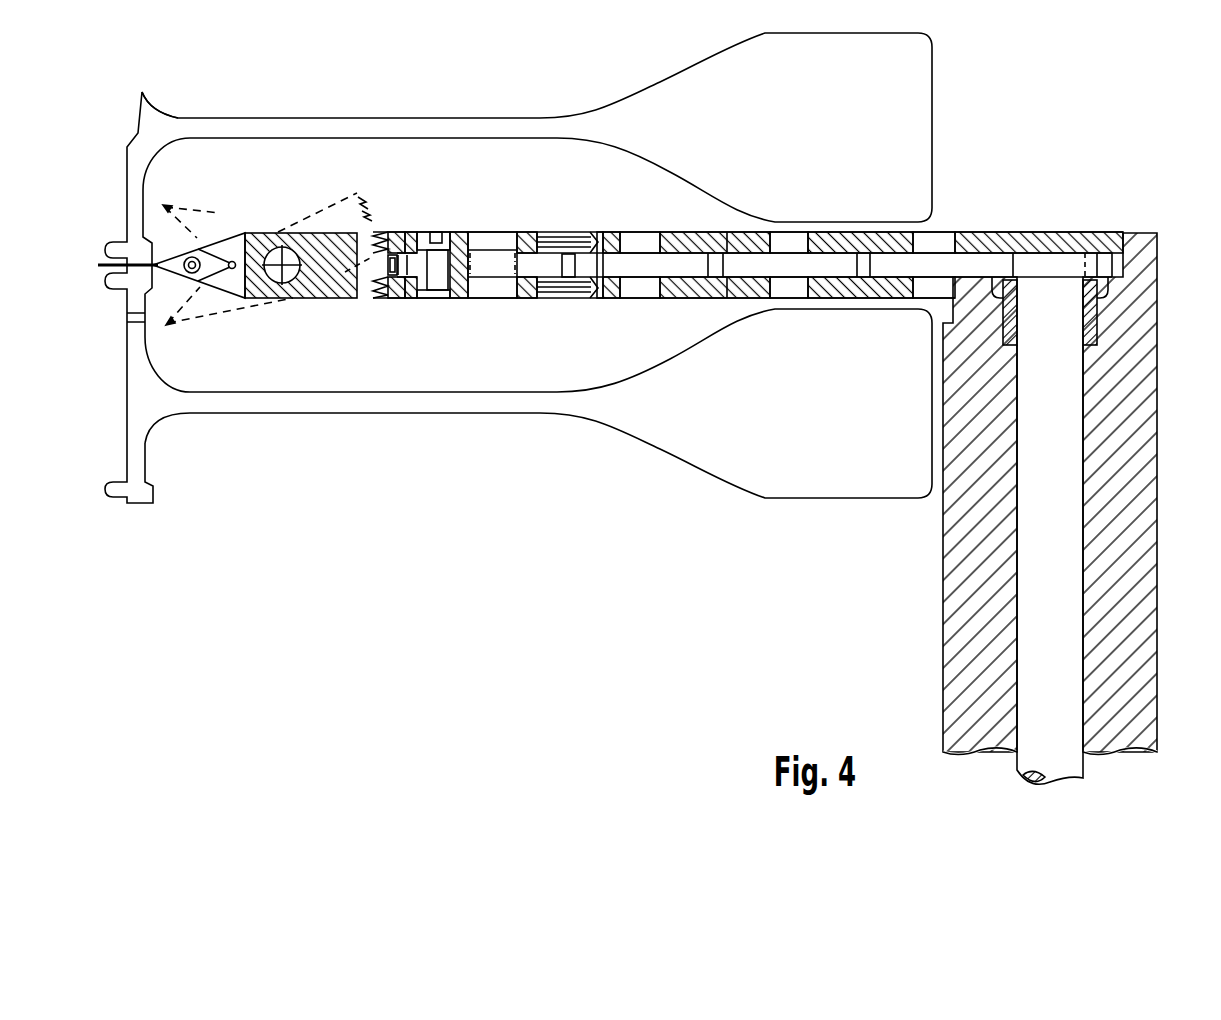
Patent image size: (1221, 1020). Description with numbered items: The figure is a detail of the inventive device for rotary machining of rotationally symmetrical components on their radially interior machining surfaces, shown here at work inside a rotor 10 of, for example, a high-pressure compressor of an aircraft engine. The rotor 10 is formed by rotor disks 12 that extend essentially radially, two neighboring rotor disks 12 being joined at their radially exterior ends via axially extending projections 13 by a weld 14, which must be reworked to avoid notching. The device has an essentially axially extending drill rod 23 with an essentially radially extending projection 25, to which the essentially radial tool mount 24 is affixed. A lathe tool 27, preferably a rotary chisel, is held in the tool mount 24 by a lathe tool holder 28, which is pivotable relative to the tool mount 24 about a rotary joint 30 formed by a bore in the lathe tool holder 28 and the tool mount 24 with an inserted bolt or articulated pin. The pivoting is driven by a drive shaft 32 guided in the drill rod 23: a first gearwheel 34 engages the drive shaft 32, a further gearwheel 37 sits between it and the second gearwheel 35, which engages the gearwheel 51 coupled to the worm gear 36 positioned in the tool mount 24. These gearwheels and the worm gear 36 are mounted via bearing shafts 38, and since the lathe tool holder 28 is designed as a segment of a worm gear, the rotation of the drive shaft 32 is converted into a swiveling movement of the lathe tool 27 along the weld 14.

The rotor 10 is at (110, 508).
The rotor disk 12 is at (370, 130).
The projection 13 is at (125, 302).
The weld 14 is at (98, 266).
The drill rod 23 is at (1147, 307).
The tool mount 24 is at (330, 290).
The projection 25 is at (750, 233).
The lathe tool 27 is at (175, 280).
The lathe tool holder 28 is at (330, 215).
The rotary joint 30 is at (278, 233).
The drive shaft 32 is at (1033, 445).
The first gearwheel 34 is at (892, 265).
The second gearwheel 35 is at (587, 263).
The worm gear 36 is at (533, 233).
The gearwheel 37 is at (840, 265).
The bearing shaft 38 is at (483, 287).
The gearwheel 51 is at (545, 265).